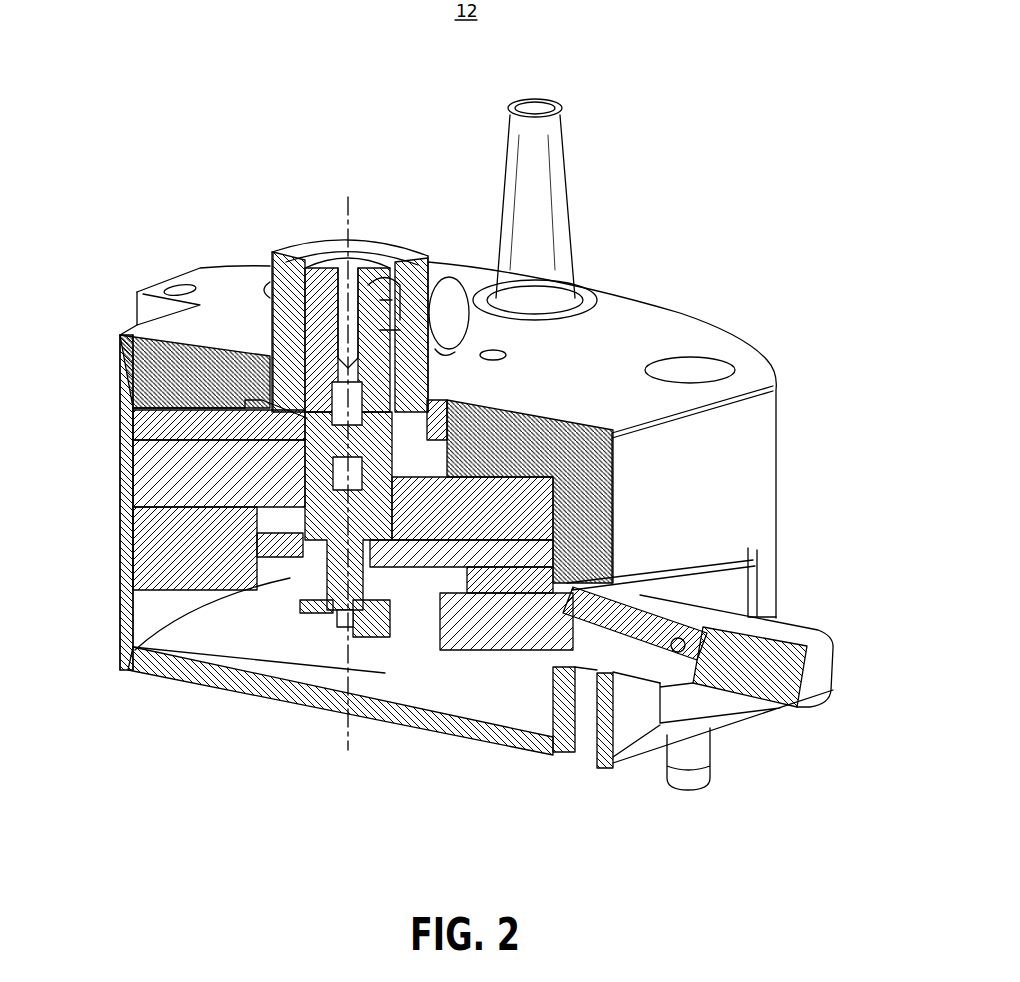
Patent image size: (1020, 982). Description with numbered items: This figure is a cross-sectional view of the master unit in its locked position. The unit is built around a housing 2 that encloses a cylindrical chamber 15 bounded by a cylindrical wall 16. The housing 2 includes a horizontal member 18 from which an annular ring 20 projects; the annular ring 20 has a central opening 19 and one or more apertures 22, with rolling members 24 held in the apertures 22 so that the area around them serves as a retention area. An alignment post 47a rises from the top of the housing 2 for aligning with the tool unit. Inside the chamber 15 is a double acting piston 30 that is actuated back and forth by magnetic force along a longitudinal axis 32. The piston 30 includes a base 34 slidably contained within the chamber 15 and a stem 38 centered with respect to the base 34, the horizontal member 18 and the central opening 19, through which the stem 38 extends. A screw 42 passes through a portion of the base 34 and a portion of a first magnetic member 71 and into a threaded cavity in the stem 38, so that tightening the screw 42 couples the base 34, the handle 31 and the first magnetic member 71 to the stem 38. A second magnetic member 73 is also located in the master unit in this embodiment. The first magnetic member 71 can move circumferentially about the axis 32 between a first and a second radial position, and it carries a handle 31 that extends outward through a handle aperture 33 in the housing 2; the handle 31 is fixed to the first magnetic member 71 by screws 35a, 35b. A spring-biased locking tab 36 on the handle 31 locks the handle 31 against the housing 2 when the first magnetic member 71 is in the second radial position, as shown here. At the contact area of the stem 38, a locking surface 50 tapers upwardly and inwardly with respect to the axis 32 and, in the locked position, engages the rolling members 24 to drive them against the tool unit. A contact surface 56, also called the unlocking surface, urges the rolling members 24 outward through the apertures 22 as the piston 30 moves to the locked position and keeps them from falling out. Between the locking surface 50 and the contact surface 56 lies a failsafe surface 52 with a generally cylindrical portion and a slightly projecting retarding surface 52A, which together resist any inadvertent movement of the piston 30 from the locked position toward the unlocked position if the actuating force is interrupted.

The housing 2 is at (468, 466).
The chamber 15 is at (340, 686).
The cylindrical wall 16 is at (95, 633).
The horizontal member 18 is at (171, 374).
The central opening 19 is at (398, 179).
The annular ring 20 is at (315, 326).
The apertures 22 is at (346, 394).
The rolling members 24 is at (540, 247).
The piston 30 is at (283, 689).
The handle 31 is at (741, 692).
The longitudinal axis 32 is at (395, 419).
The handle aperture 33 is at (701, 567).
The base 34 is at (188, 578).
The screw 35a is at (102, 676).
The screw 35b is at (320, 740).
The locking tab 36 is at (599, 530).
The stem 38 is at (190, 423).
The screw 42 is at (419, 664).
The alignment post 47a is at (563, 198).
The locking surface 50 is at (458, 295).
The failsafe surface 52 is at (430, 268).
The retarding surface 52A is at (432, 245).
The contact surface 56 is at (412, 236).
The first magnetic member 71 is at (189, 482).
The second magnetic member 73 is at (189, 445).